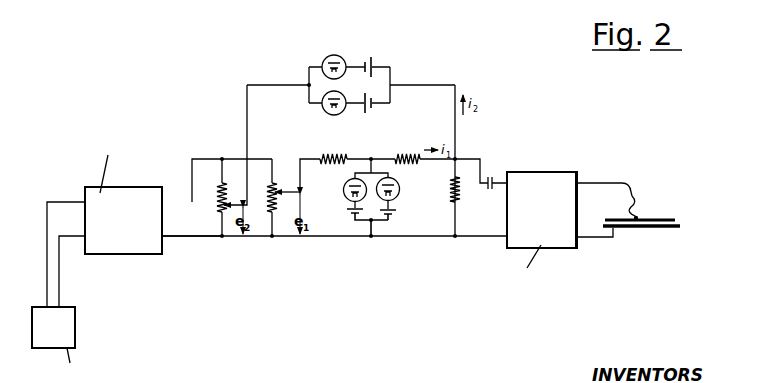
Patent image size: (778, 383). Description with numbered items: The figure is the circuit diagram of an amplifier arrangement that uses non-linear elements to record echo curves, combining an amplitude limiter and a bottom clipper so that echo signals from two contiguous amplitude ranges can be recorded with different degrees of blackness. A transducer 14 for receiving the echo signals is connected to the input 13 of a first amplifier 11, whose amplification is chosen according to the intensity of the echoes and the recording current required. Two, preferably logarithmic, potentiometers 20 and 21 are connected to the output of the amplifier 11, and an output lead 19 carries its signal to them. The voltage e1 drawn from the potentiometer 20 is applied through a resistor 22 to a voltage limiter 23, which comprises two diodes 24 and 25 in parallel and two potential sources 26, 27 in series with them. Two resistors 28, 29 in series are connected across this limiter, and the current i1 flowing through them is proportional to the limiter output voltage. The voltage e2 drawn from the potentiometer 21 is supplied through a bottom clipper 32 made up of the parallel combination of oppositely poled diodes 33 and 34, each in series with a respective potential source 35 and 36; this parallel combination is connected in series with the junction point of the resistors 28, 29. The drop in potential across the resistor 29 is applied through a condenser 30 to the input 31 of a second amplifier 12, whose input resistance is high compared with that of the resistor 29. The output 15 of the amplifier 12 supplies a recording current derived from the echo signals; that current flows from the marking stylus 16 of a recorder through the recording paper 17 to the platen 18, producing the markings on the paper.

The amplifier 11 is at (117, 190).
The amplifier 12 is at (543, 176).
The input 13 is at (60, 204).
The transducer 14 is at (68, 329).
The output 15 is at (595, 192).
The marking stylus 16 is at (638, 211).
The recording paper 17 is at (666, 218).
The platen 18 is at (640, 230).
The output lead 19 is at (178, 226).
The potentiometer 20 is at (268, 212).
The potentiometer 21 is at (216, 200).
The resistor 22 is at (326, 157).
The voltage limiter 23 is at (393, 177).
The diode 24 is at (344, 187).
The diode 25 is at (398, 191).
The potential source 26 is at (350, 220).
The potential source 27 is at (390, 220).
The resistor 28 is at (400, 157).
The resistor 29 is at (461, 190).
The condenser 30 is at (492, 172).
The input 31 is at (490, 228).
The bottom clipper 32 is at (388, 81).
The diode 33 is at (334, 55).
The diode 34 is at (325, 113).
The potential source 35 is at (370, 54).
The potential source 36 is at (373, 108).